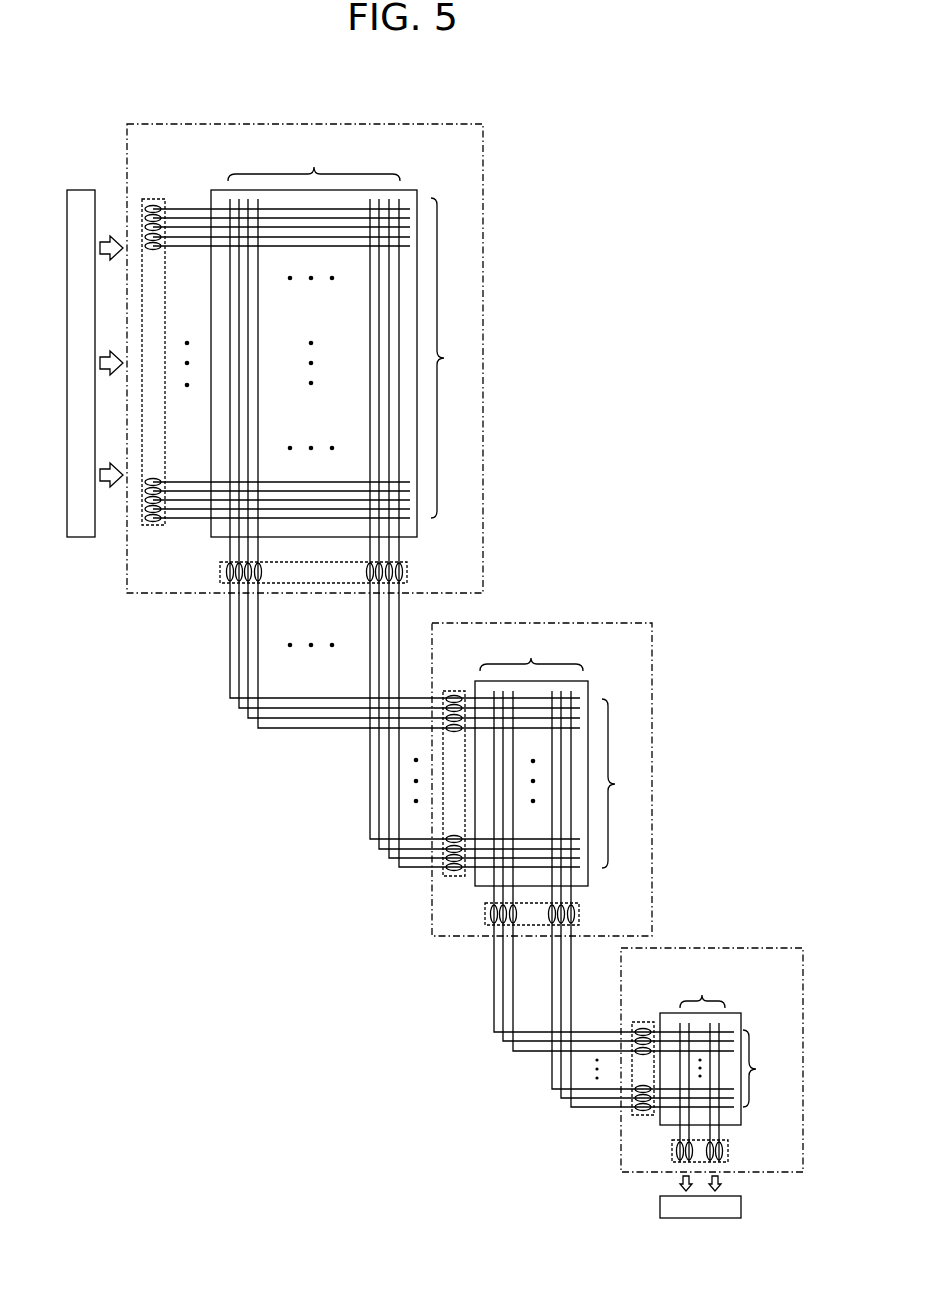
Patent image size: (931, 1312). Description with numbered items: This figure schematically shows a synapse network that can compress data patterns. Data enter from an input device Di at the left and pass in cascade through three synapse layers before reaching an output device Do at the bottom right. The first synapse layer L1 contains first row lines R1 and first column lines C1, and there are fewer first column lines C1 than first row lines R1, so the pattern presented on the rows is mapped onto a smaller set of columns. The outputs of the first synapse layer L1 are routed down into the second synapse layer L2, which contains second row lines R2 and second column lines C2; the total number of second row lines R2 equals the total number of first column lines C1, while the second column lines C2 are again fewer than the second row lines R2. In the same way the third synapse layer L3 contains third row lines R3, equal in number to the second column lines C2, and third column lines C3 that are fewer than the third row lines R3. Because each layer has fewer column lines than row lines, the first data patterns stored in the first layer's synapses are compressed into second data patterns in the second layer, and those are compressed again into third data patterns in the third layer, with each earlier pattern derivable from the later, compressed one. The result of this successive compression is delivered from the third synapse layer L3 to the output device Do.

The first synapse layer L1 is at (483, 235).
The second synapse layer L2 is at (578, 622).
The third synapse layer L3 is at (742, 948).
The first column lines C1 is at (314, 160).
The second column lines C2 is at (531, 653).
The third column lines C3 is at (702, 990).
The first row lines R1 is at (453, 358).
The second row lines R2 is at (624, 783).
The third row lines R3 is at (765, 1068).
The input device Di is at (81, 538).
The output device Do is at (742, 1207).